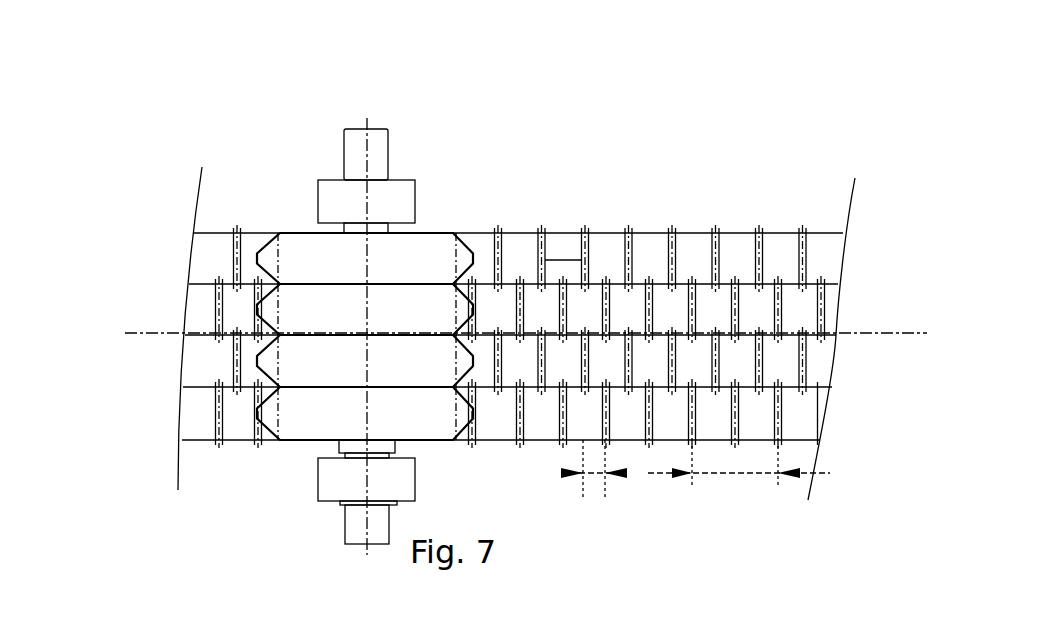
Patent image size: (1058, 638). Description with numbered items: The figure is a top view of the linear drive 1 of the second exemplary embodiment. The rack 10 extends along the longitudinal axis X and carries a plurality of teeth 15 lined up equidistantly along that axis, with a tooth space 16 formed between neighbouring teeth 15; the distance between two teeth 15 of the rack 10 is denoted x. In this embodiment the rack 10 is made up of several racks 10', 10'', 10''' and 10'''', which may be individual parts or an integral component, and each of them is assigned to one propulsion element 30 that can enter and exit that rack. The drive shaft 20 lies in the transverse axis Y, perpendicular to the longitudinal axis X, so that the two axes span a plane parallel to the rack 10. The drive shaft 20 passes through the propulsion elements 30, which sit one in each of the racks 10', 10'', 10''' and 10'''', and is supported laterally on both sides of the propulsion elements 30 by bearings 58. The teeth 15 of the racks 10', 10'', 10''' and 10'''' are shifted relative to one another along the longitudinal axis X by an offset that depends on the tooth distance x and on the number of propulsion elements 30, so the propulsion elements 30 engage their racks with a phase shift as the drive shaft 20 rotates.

The conveyor 1 is at (266, 88).
The rack 10 is at (539, 321).
The rack 10' is at (549, 184).
The rack 10'' is at (520, 231).
The rack 10''' is at (520, 272).
The rack 10'''' is at (517, 271).
The teeth 15 is at (581, 238).
The tooth space 16 is at (545, 263).
The drive shaft 20 is at (355, 529).
The propulsion element 30 is at (498, 209).
The bearings 58 is at (337, 483).
The longitudinal axis X is at (155, 333).
The transverse axis Y is at (367, 148).
The distance between two teeth x is at (733, 473).